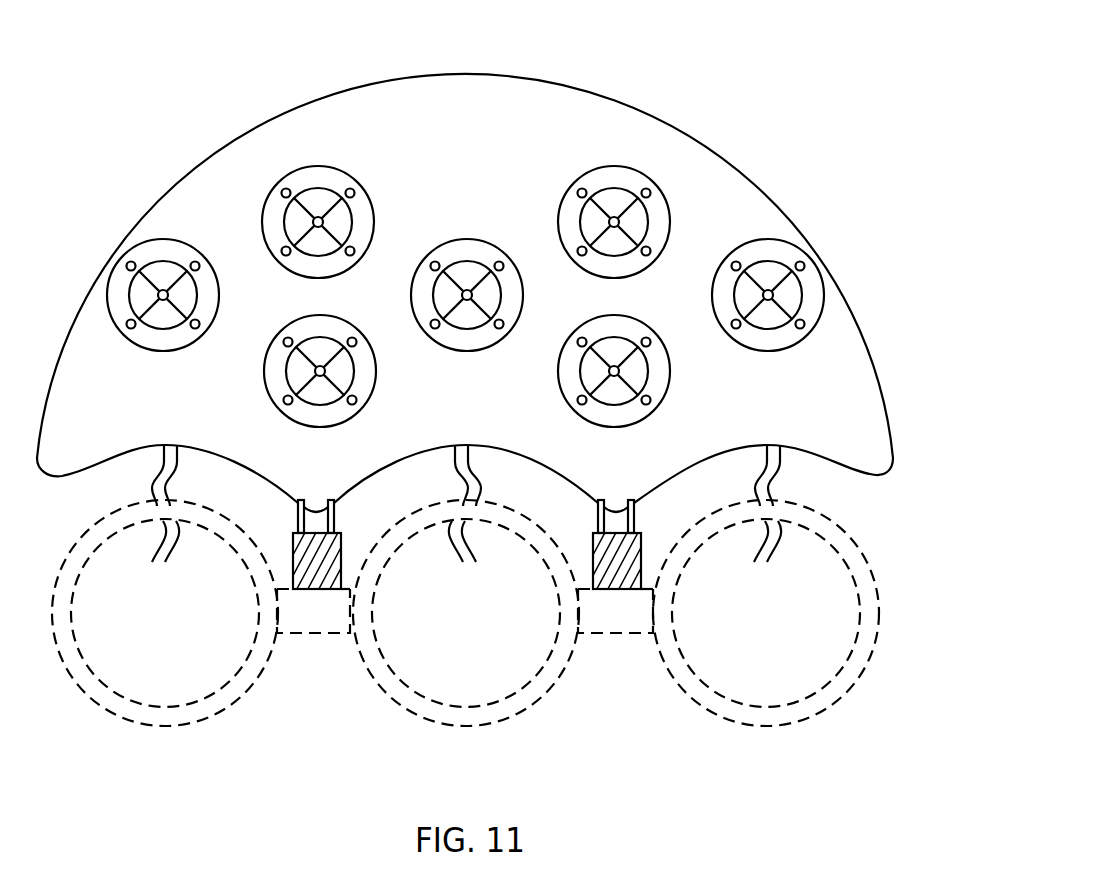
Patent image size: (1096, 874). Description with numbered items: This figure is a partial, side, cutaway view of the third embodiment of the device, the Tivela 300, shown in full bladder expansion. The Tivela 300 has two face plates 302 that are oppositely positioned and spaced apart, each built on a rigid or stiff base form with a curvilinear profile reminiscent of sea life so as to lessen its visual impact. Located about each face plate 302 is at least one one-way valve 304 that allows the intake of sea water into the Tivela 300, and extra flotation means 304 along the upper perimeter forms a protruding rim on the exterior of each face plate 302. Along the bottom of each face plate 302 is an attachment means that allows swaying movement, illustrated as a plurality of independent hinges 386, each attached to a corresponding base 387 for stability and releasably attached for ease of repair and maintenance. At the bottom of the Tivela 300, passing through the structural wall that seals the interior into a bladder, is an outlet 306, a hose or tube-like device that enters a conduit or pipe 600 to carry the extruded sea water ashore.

The Tivela 300 is at (772, 72).
The face plate 302 is at (566, 97).
The one-way valve 304 is at (323, 178).
The outlet 306 is at (150, 488).
The hinge 386 is at (335, 517).
The base 387 is at (315, 590).
The conduit or pipe 600 is at (152, 727).